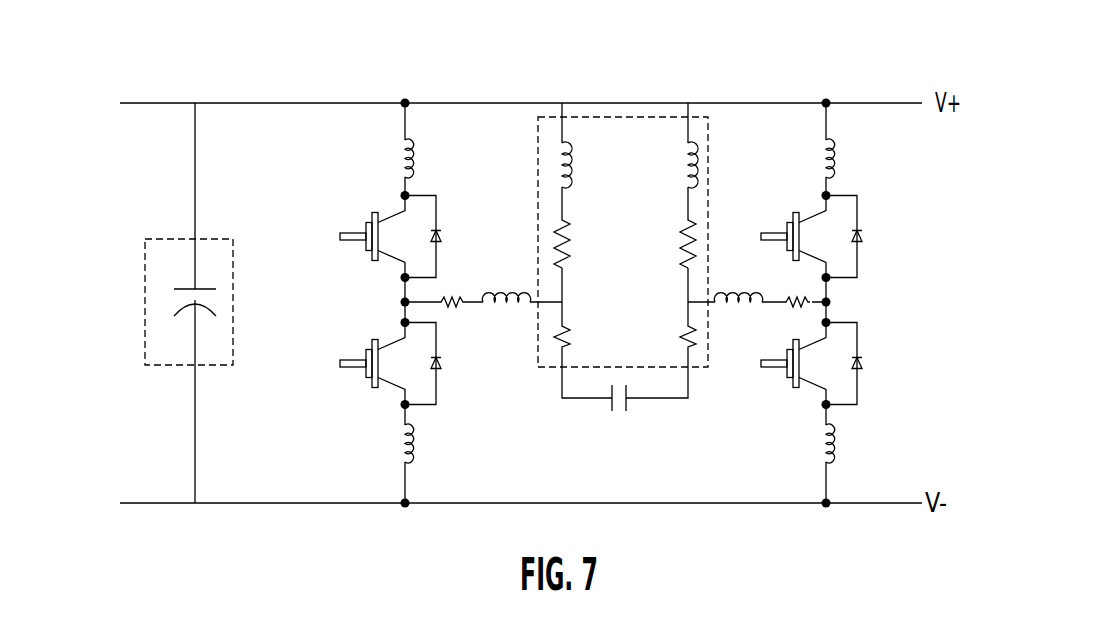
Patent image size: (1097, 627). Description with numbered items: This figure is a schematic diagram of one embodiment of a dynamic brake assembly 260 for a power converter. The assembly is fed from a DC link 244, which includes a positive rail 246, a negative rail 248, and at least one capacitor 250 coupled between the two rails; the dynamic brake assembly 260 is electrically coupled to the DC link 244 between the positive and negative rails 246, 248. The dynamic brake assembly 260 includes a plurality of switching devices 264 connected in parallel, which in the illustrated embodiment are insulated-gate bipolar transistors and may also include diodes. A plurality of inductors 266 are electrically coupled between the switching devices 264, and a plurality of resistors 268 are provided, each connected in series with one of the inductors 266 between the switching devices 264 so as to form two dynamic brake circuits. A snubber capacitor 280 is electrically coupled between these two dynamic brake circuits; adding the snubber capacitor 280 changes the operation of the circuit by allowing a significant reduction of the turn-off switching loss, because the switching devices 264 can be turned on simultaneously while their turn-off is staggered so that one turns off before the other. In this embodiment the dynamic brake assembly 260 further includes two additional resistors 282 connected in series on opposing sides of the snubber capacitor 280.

The DC link 244 is at (95, 207).
The positive rail 246 is at (340, 102).
The negative rail 248 is at (310, 505).
The capacitor 250 is at (143, 305).
The dynamic brake assembly 260 is at (615, 256).
The switching devices 264 is at (385, 275).
The inductors 266 is at (548, 160).
The resistors 268 is at (548, 243).
The snubber capacitor 280 is at (631, 412).
The additional resistors 282 is at (549, 355).